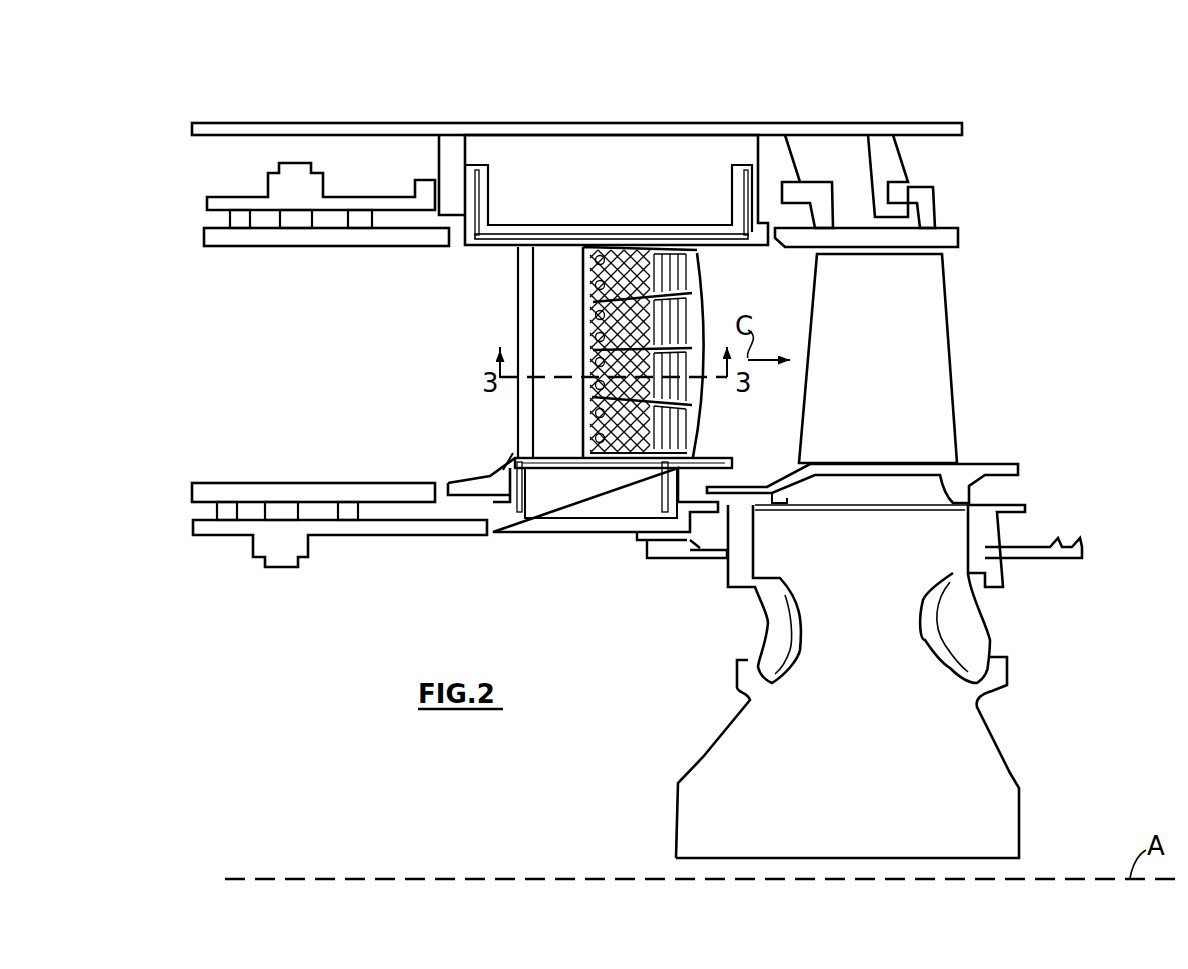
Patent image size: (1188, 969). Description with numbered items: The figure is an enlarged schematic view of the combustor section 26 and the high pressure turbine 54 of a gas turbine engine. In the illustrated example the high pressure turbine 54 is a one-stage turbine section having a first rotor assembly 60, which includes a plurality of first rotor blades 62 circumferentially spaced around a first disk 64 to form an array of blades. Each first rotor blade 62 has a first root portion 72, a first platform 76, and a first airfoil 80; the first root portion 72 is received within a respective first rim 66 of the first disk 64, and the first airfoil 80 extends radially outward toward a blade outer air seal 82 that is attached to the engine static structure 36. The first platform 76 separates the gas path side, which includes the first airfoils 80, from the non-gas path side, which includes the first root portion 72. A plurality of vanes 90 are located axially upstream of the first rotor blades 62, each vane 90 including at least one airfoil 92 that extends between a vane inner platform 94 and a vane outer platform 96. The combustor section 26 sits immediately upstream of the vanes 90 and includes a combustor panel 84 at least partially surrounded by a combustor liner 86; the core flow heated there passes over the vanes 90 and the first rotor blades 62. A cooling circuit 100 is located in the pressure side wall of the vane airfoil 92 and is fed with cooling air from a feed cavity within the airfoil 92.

The combustor section 26 is at (393, 77).
The high pressure turbine 54 is at (963, 78).
The engine static structure 36 is at (582, 122).
The first rotor assembly 60 is at (1000, 272).
The first rotor blades 62 is at (987, 380).
The first disk 64 is at (890, 728).
The first rim 66 is at (942, 546).
The first root portion 72 is at (893, 506).
The first platform 76 is at (985, 470).
The first airfoil 80 is at (893, 371).
The blade outer air seal 82 is at (947, 237).
The combustor panel 84 is at (335, 246).
The combustor liner 86 is at (350, 197).
The vanes 90 is at (727, 283).
The airfoil 92 is at (522, 340).
The vane inner platform 94 is at (710, 466).
The vane outer platform 96 is at (495, 258).
The cooling circuit 100 is at (708, 392).